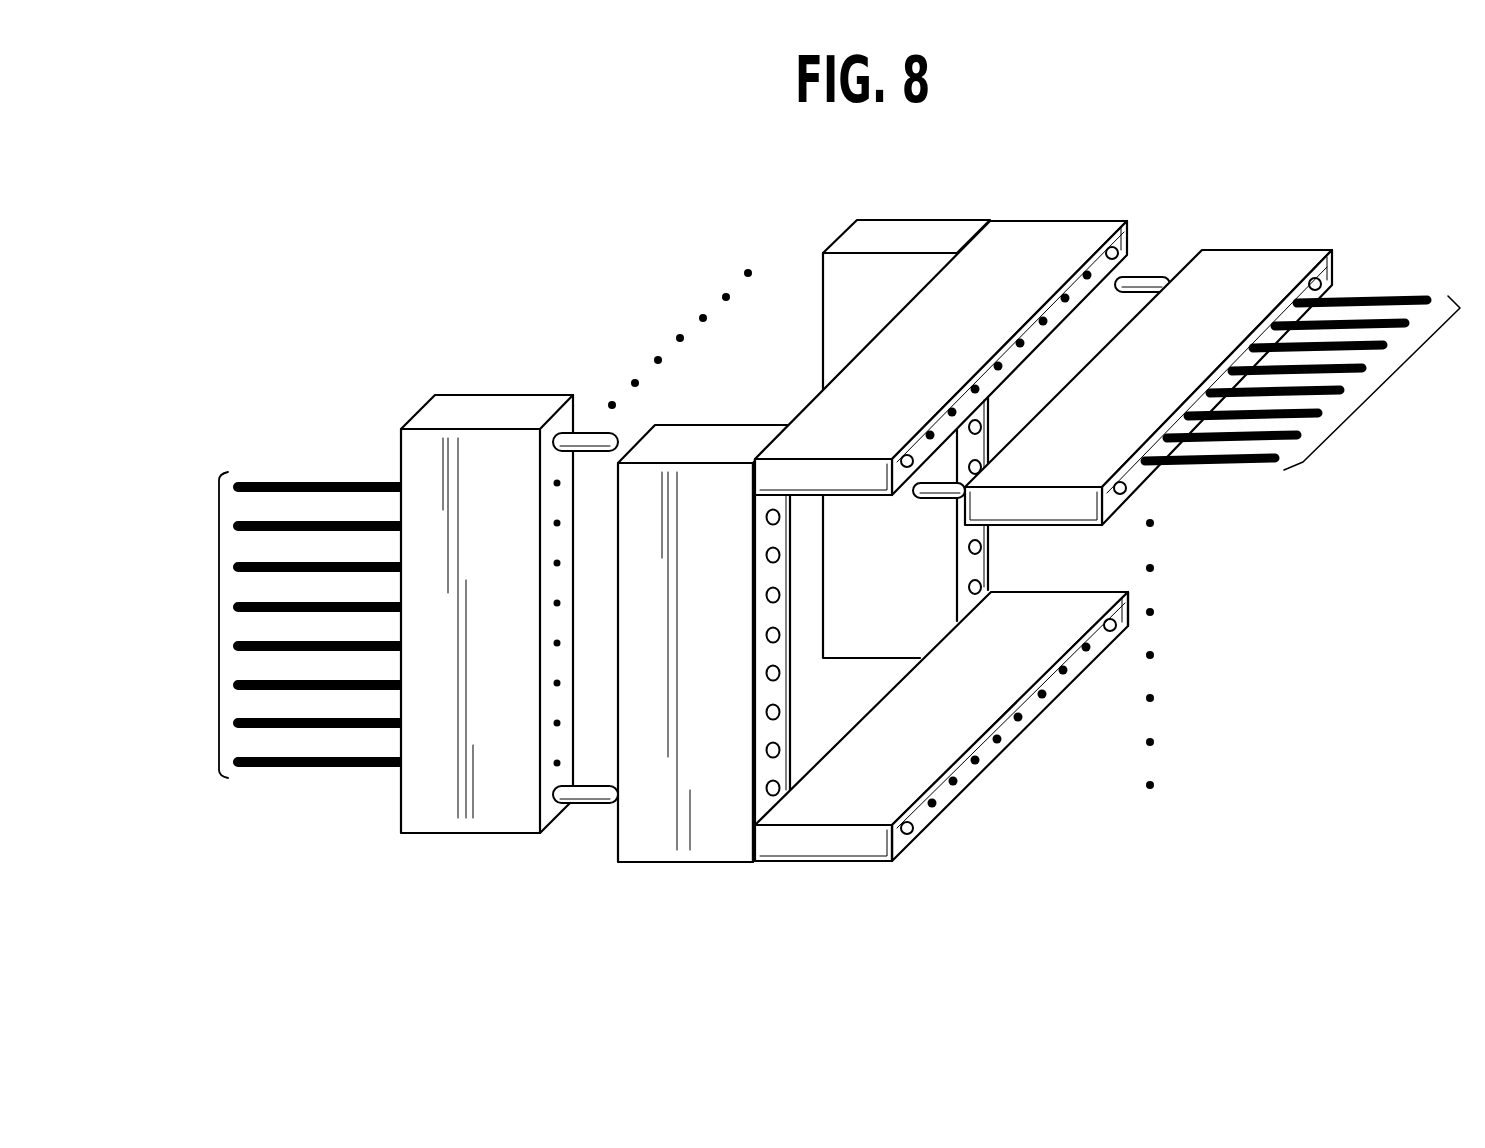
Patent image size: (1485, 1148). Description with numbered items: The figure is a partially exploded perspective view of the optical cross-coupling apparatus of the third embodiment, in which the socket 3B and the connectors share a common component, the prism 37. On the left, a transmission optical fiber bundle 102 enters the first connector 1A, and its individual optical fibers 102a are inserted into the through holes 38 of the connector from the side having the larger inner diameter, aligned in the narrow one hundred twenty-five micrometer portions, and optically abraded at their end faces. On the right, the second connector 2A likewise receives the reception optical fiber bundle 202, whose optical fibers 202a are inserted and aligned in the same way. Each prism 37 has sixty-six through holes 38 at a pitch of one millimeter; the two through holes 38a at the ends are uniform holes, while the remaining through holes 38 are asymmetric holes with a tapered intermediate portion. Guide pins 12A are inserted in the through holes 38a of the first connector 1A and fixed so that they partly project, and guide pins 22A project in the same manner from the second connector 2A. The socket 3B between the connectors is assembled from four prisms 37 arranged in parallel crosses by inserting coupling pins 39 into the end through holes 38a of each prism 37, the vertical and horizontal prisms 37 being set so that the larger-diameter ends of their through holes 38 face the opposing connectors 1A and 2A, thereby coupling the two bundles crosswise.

The first connector 1A is at (478, 405).
The guide pins 12A is at (593, 433).
The optical fiber bundle 102 is at (268, 583).
The optical fibers 102a is at (306, 484).
The prism 37 is at (710, 837).
The through holes 38 is at (952, 410).
The through holes at the two ends 38a is at (900, 843).
The coupling pins 39 is at (913, 833).
The socket 3B is at (987, 203).
The guide pins 22A is at (1147, 278).
The second connector 2A is at (1272, 265).
The optical fiber bundle 202 is at (1311, 345).
The optical fibers 202a is at (1370, 302).